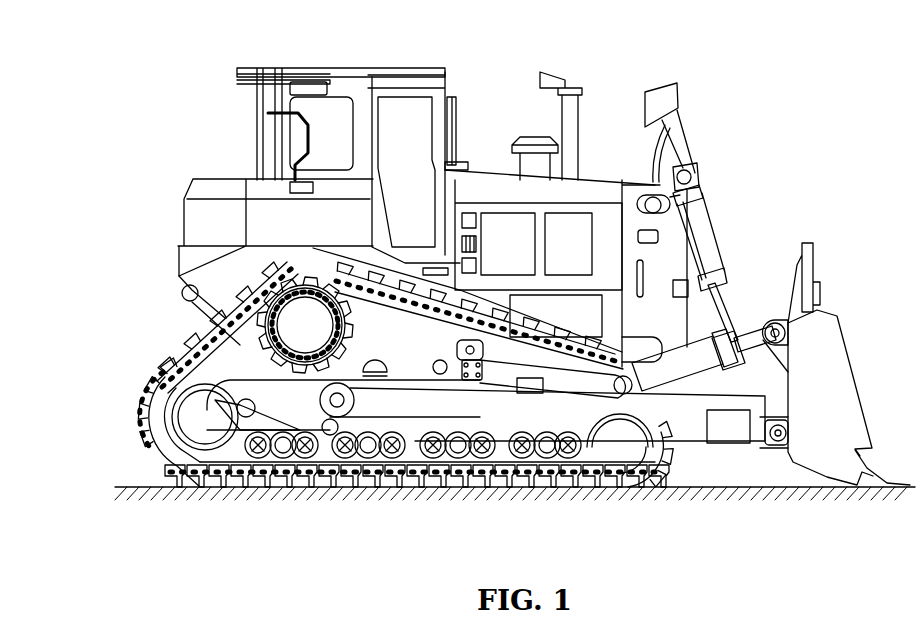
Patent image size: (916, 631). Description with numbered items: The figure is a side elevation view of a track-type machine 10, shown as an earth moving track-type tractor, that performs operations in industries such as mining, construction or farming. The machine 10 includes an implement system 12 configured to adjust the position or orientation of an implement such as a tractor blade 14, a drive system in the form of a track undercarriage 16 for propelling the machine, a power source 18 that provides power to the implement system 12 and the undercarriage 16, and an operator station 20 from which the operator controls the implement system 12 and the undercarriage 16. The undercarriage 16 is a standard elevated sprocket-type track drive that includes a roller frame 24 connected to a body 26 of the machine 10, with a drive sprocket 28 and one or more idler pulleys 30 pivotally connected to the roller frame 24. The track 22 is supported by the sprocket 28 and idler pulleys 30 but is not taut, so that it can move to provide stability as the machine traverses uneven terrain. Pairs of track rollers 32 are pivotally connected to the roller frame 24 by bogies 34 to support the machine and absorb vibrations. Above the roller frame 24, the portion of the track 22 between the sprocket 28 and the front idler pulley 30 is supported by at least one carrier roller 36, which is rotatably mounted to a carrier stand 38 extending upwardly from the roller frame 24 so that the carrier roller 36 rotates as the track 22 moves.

The track-type machine 10 is at (240, 48).
The implement system 12 is at (742, 355).
The tractor blade 14 is at (835, 425).
The track undercarriage 16 is at (652, 482).
The power source 18 is at (500, 225).
The operator station 20 is at (378, 72).
The track 22 is at (165, 385).
The roller frame 24 is at (205, 432).
The body 26 is at (592, 195).
The drive sprocket 28 is at (303, 326).
The idler pulley 30 is at (196, 428).
The track rollers 32 is at (262, 481).
The bogies 34 is at (283, 448).
The carrier roller 36 is at (437, 348).
The carrier stand 38 is at (477, 347).